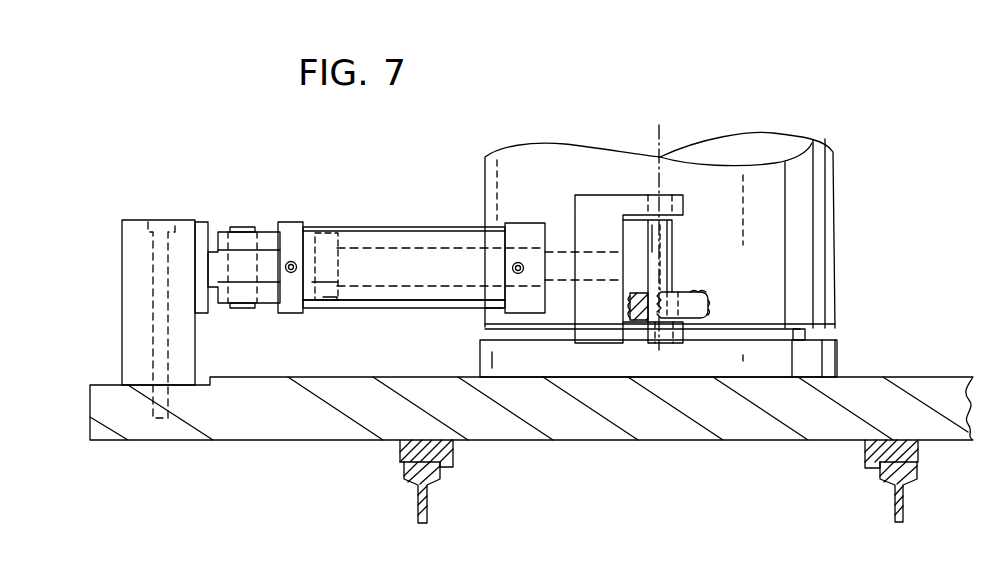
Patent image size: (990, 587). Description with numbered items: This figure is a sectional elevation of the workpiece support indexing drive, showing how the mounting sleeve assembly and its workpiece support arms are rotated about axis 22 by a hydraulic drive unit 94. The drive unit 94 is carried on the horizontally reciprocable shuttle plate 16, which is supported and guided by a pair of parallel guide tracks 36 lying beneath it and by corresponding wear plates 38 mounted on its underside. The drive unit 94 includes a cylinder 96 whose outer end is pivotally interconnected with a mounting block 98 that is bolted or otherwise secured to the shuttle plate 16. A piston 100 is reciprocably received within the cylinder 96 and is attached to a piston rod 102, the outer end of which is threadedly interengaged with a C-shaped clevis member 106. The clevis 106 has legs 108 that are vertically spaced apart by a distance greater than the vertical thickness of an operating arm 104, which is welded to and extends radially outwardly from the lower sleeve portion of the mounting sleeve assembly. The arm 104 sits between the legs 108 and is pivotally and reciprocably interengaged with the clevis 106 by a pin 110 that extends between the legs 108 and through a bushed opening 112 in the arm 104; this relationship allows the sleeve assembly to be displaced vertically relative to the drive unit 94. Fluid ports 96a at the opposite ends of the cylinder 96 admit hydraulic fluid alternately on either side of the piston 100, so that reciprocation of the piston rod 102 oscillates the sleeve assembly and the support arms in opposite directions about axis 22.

The shuttle plate 16 is at (921, 376).
The axis 22 is at (659, 150).
The guide tracks 36 is at (435, 479).
The wear plates 38 is at (401, 450).
The hydraulic drive unit 94 is at (439, 260).
The cylinder 96 is at (420, 302).
The fluid ports 96a is at (291, 275).
The mounting block 98 is at (132, 230).
The piston 100 is at (327, 306).
The piston rod 102 is at (556, 250).
The operating arm 104 is at (700, 300).
The C-shaped clevis member 106 is at (587, 330).
The legs 108 is at (683, 215).
The pin 110 is at (672, 242).
The bushed opening 112 is at (645, 300).